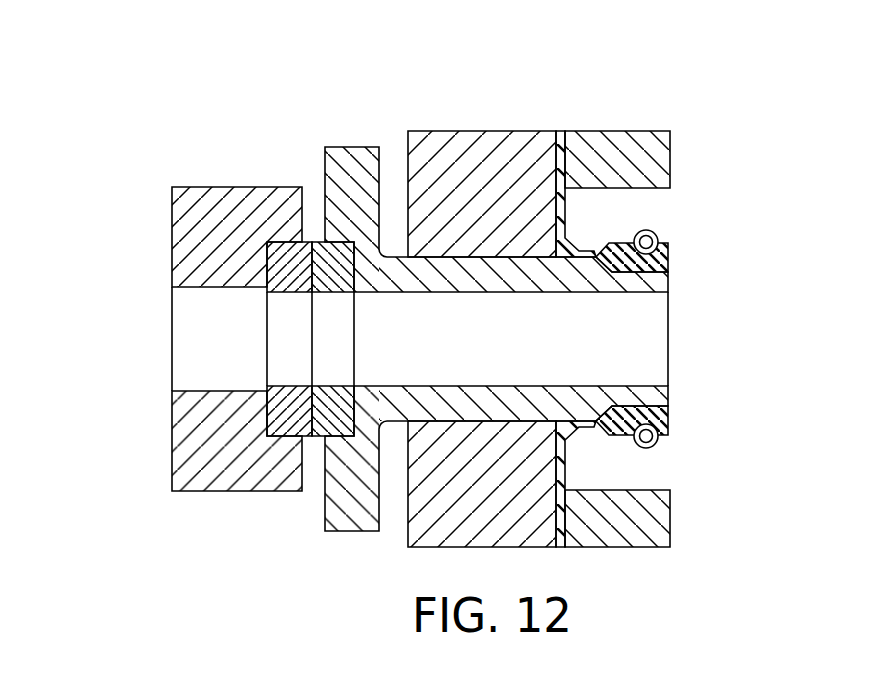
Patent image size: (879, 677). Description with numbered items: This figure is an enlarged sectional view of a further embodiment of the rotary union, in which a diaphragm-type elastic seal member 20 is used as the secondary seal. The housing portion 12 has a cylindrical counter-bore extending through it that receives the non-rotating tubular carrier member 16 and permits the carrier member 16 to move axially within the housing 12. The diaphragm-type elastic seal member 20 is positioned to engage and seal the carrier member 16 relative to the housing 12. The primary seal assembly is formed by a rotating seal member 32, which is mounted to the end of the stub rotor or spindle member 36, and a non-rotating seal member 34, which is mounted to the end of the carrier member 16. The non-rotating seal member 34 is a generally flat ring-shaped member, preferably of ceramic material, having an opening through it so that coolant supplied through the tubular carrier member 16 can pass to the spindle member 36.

The housing portion 12 is at (504, 158).
The tubular carrier member 16 is at (652, 290).
The elastic seal member 20 is at (560, 207).
The rotating seal member 32 is at (292, 272).
The non-rotating seal member 34 is at (328, 418).
The spindle member 36 is at (252, 208).